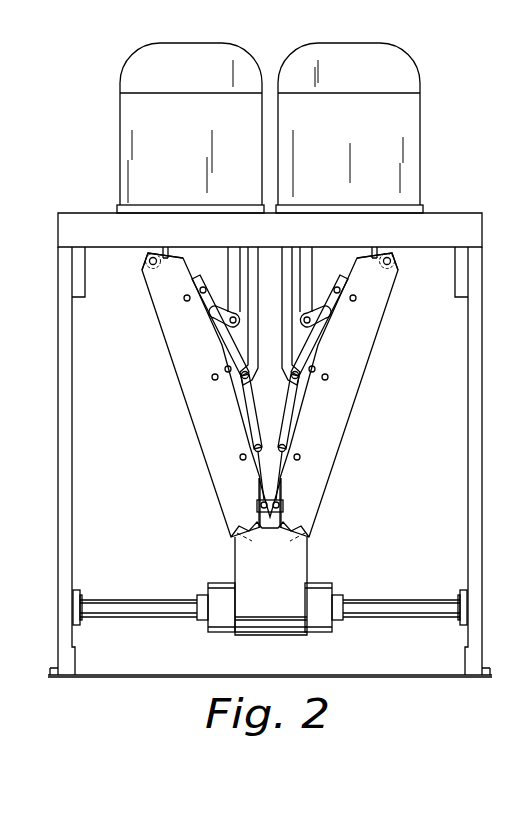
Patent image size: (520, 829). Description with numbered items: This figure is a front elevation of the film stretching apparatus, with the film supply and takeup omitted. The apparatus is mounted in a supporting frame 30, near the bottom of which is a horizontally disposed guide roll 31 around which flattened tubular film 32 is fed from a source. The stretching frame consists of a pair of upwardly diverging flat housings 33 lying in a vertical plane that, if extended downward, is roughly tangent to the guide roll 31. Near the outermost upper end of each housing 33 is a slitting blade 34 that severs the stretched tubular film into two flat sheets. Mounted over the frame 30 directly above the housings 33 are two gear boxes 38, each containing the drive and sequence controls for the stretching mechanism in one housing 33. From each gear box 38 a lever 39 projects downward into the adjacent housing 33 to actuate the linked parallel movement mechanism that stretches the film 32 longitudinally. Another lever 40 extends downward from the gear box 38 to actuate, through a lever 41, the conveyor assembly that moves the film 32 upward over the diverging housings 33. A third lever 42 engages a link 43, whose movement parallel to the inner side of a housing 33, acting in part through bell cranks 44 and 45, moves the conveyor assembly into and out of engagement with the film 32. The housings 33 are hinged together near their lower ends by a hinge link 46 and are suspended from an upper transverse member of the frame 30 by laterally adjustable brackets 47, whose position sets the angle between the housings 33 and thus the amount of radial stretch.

The supporting frame 30 is at (63, 432).
The guide roll 31 is at (222, 590).
The flattened tubular film 32 is at (309, 572).
The flat housing 33 is at (200, 423).
The slitting blade 34 is at (140, 284).
The gear box 38 is at (297, 73).
The lever 39 is at (170, 253).
The lever 40 is at (232, 295).
The lever 41 is at (288, 322).
The lever 42 is at (255, 358).
The link 43 is at (288, 410).
The bell crank 44 is at (288, 383).
The bell crank 45 is at (257, 453).
The hinge link 46 is at (272, 522).
The laterally adjustable bracket 47 is at (148, 261).